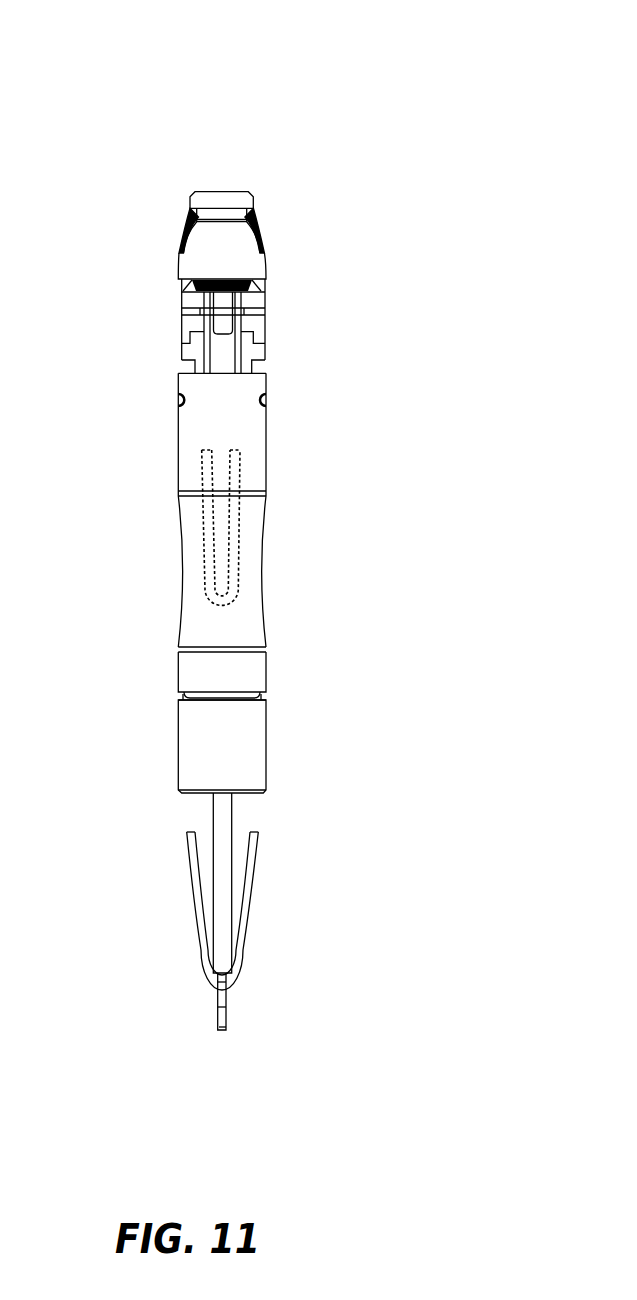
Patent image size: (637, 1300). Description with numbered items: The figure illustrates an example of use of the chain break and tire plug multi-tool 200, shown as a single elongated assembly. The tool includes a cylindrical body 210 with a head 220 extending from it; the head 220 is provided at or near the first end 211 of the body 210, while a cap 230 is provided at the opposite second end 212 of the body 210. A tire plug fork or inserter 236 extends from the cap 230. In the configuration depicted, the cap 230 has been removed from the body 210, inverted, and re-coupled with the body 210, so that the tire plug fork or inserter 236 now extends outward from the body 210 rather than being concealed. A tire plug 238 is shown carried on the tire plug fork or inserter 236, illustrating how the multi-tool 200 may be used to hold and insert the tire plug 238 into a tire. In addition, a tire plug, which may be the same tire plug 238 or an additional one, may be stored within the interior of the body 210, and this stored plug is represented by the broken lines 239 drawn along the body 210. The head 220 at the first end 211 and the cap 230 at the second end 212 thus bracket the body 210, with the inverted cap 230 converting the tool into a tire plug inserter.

The chain break and tire plug multi-tool 200 is at (405, 70).
The head 220 is at (166, 175).
The first end 211 is at (147, 366).
The cylindrical body 210 is at (293, 519).
The second end 212 is at (149, 611).
The broken lines 239 is at (238, 572).
The cap 230 is at (149, 751).
The tire plug 238 is at (247, 908).
The tire plug fork or inserter 236 is at (218, 993).